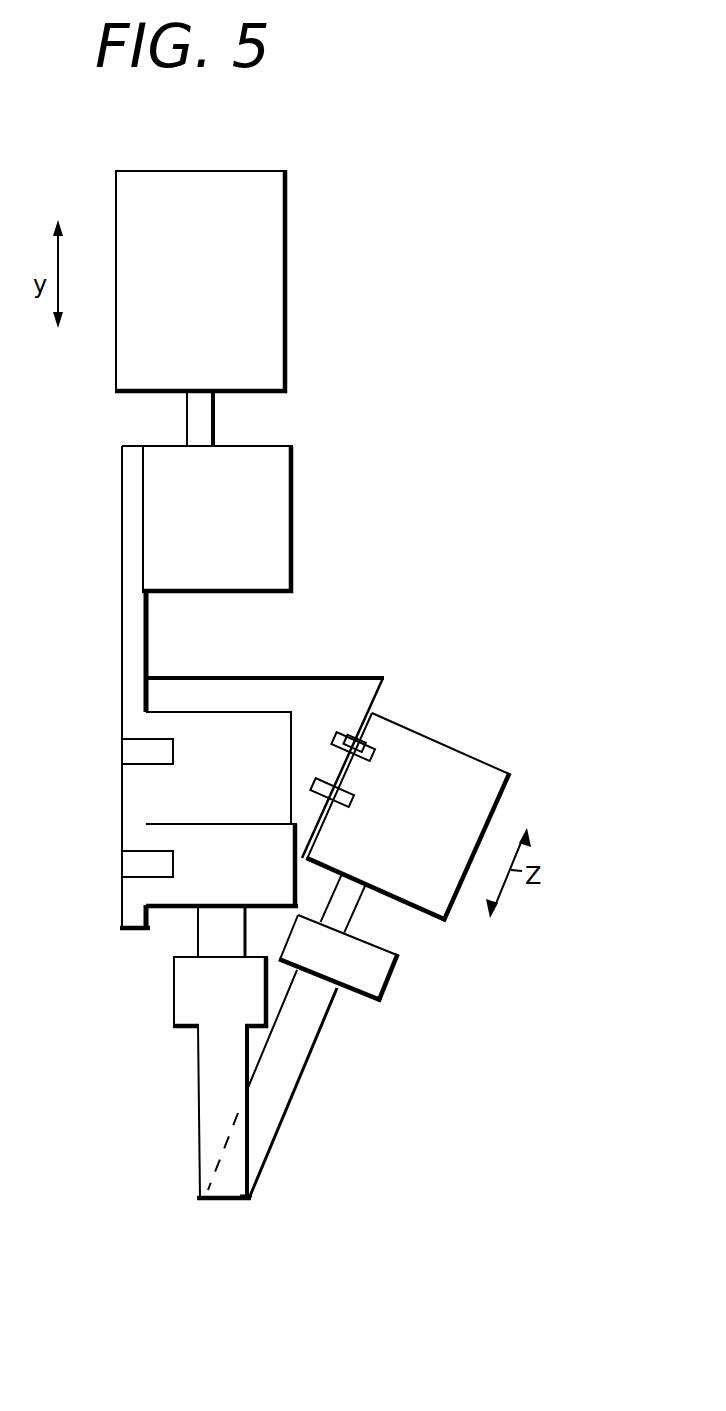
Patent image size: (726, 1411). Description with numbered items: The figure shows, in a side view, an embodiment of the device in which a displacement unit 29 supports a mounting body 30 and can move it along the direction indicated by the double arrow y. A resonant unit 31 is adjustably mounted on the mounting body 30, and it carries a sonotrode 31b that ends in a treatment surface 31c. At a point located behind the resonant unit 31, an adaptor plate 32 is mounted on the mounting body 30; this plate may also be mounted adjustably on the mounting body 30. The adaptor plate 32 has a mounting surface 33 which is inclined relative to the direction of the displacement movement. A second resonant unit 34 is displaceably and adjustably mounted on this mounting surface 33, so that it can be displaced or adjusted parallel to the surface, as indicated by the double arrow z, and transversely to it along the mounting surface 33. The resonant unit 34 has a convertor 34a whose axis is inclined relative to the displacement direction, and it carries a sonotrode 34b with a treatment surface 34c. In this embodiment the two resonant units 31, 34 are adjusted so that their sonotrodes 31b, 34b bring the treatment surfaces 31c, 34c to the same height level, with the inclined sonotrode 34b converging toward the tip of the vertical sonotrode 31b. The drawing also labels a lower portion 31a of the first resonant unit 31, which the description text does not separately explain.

The displacement unit 29 is at (267, 266).
The mounting body 30 is at (118, 571).
The resonant unit 31 is at (214, 702).
The drive unit body 31a is at (185, 888).
The sonotrode 31b is at (212, 1065).
The treatment surface 31c is at (227, 1214).
The adaptor plate 32 is at (333, 678).
The mounting surface 33 is at (392, 697).
The resonant unit 34 is at (465, 747).
The convertor 34a is at (468, 800).
The sonotrode 34b is at (297, 1053).
The treatment surface 34c is at (260, 1240).